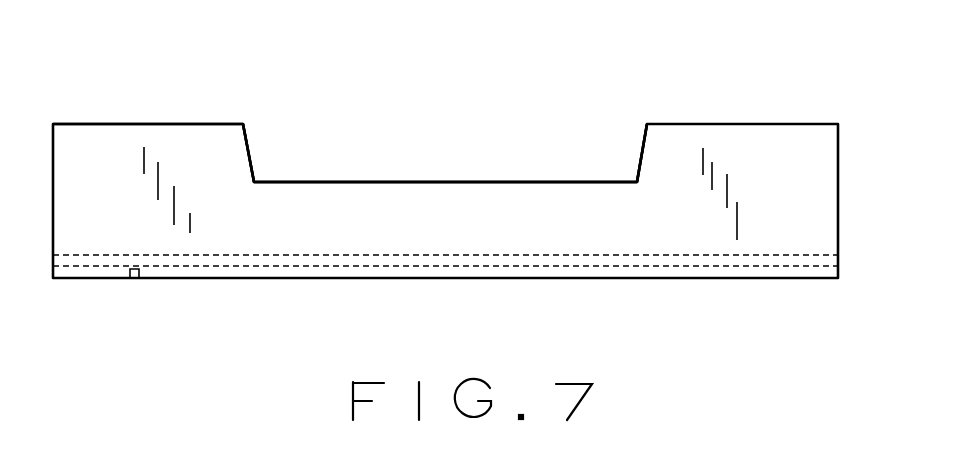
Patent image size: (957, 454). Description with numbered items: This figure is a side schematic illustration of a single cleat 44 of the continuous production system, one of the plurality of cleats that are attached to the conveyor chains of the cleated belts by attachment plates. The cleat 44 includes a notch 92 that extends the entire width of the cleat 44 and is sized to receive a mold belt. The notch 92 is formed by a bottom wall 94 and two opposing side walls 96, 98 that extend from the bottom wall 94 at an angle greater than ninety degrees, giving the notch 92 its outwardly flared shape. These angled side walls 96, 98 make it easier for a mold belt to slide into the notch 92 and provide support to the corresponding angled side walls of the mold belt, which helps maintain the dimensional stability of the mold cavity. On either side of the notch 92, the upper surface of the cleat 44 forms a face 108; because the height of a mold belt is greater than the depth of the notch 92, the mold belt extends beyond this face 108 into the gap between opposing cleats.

The cleat 44 is at (723, 82).
The face 108 is at (118, 124).
The side wall 96 is at (250, 150).
The bottom wall 94 is at (310, 182).
The notch 92 is at (423, 127).
The side wall 98 is at (640, 162).